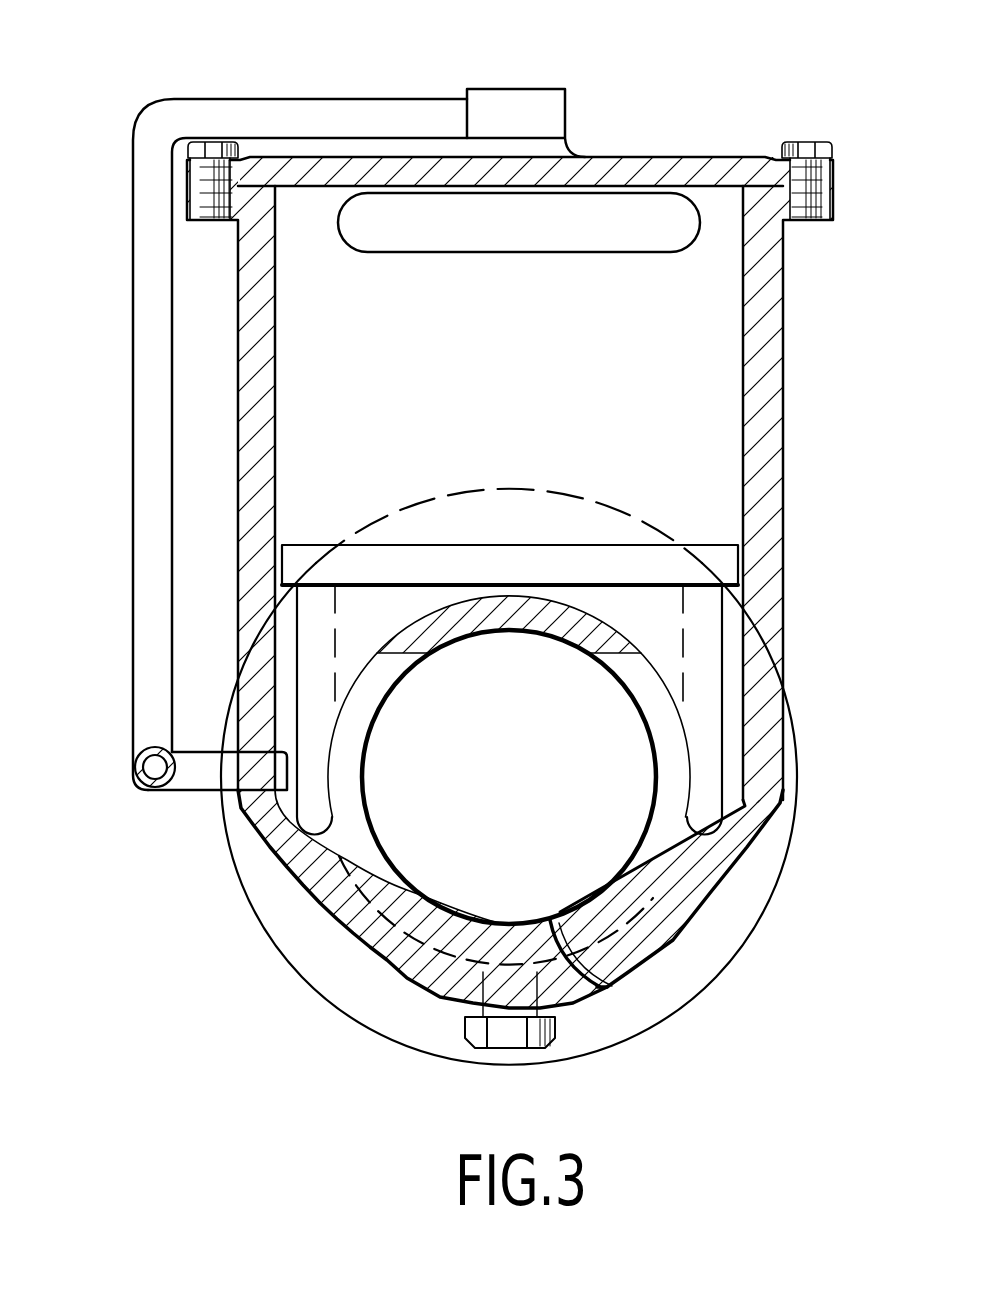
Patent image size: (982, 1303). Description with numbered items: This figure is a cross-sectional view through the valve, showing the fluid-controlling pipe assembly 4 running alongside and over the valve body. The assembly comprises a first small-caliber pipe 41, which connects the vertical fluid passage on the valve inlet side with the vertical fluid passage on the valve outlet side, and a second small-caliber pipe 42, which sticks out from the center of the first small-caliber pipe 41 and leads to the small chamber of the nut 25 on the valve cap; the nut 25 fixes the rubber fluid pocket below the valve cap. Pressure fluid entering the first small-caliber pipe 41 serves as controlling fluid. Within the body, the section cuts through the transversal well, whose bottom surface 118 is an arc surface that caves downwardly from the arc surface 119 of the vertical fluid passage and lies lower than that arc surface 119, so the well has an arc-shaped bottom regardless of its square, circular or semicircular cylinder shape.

The fluid-controlling pipe assembly 4 is at (132, 477).
The second small-caliber pipe 42 is at (155, 312).
The first small-caliber pipe 41 is at (213, 767).
The nut 25 is at (497, 120).
The bottom surface 118 is at (387, 957).
The arc surface 119 is at (615, 983).